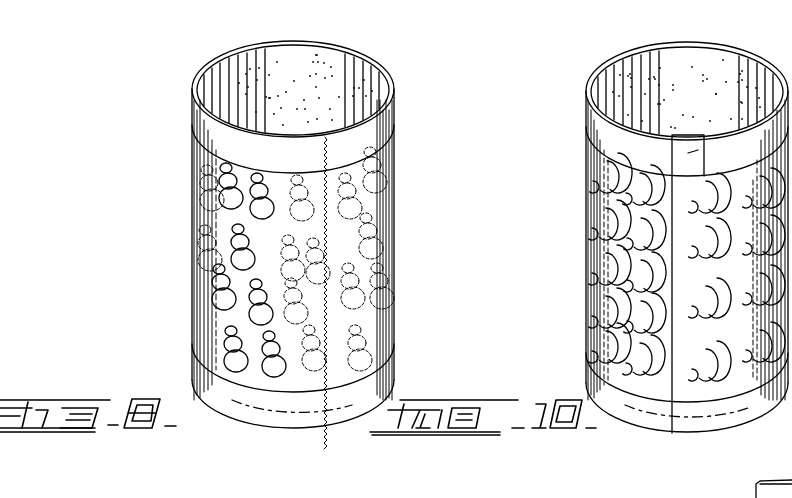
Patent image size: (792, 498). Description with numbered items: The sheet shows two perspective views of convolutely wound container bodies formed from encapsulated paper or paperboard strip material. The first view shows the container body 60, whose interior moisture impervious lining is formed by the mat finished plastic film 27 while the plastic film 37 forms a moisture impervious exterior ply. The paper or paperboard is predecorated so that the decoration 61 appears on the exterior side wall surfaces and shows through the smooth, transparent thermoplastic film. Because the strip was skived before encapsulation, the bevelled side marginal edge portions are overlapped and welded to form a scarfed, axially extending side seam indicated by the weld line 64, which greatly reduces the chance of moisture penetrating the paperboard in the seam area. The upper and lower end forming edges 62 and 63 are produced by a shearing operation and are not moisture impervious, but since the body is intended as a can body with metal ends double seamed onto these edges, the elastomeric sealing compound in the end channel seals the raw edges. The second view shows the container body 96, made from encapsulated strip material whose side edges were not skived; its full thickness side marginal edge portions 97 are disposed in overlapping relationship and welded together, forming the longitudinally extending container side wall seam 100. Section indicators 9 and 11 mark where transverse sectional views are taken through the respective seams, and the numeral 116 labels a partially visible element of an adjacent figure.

In FIG. 8, the container body 60 is at (403, 193).
In FIG. 8, the upper end forming edge 62 is at (232, 53).
In FIG. 8, the mat finished plastic film 27 is at (338, 66).
In FIG. 10, the mat finished plastic film 27 is at (616, 88).
In FIG. 8, the plastic film 37 is at (210, 133).
In FIG. 8, the weld line 64 is at (327, 160).
In FIG. 8, the decoration 61 is at (213, 221).
In FIG. 8, the lower end forming edge 63 is at (218, 413).
In FIG. 8, the section line 9 is at (253, 382).
In FIG. 10, the container body 96 is at (583, 240).
In FIG. 10, the container side wall seam 100 is at (684, 172).
In FIG. 10, the side marginal edge portions 97 is at (688, 153).
In FIG. 10, the section line 11 is at (638, 390).
In FIG. 10, the element 116 is at (752, 494).